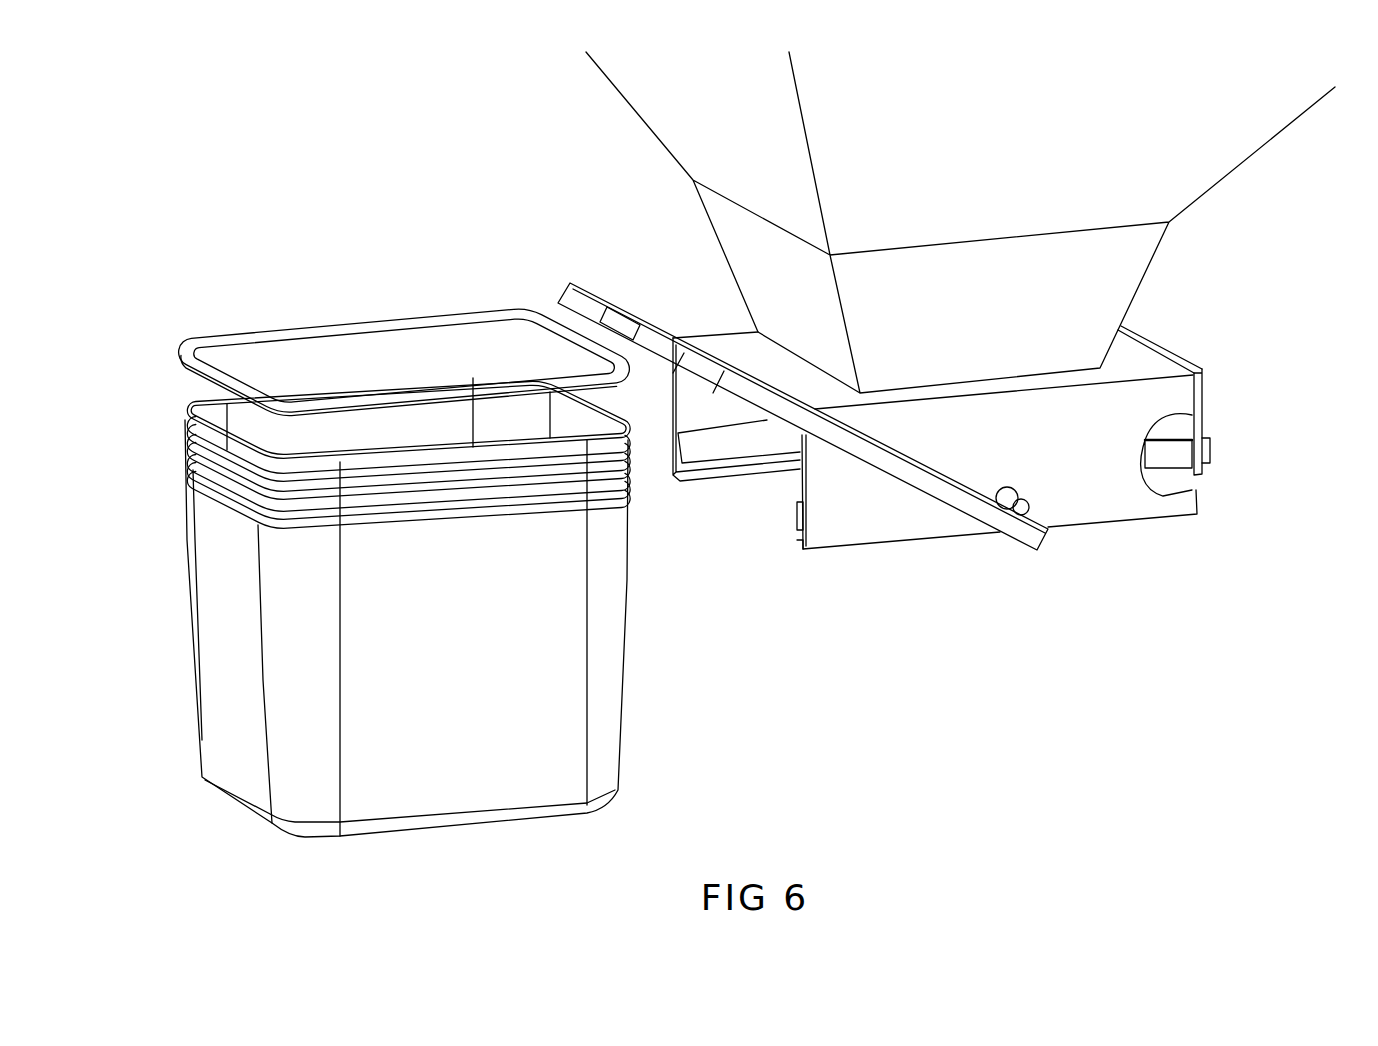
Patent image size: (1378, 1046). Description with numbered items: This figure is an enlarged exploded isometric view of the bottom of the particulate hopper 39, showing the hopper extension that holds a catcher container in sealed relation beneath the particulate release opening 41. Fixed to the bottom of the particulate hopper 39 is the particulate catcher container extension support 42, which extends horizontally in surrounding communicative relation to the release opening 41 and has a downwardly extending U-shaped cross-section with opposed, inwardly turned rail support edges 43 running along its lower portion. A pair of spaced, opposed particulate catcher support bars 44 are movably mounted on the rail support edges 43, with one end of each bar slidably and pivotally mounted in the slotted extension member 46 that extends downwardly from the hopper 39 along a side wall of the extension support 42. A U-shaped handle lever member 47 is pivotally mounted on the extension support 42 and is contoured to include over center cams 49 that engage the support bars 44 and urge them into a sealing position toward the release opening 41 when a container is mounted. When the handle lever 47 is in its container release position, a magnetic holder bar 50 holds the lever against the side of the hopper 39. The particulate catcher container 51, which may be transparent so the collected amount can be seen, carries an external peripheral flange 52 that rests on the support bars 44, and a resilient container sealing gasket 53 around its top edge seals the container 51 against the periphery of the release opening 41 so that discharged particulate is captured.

The particulate hopper 39 is at (1002, 192).
The particulate release opening 41 is at (958, 383).
The particulate catcher container extension support 42 is at (1090, 446).
The rail support edges 43 is at (783, 477).
The particulate catcher support bars 44 is at (697, 447).
The slotted extension member 46 is at (1202, 417).
The U-shaped handle lever member 47 is at (872, 457).
The over center cams 49 is at (1030, 505).
The magnetic holder bar 50 is at (612, 316).
The particulate catcher container 51 is at (450, 646).
The external peripheral flange 52 is at (633, 487).
The resilient container sealing gasket 53 is at (242, 336).